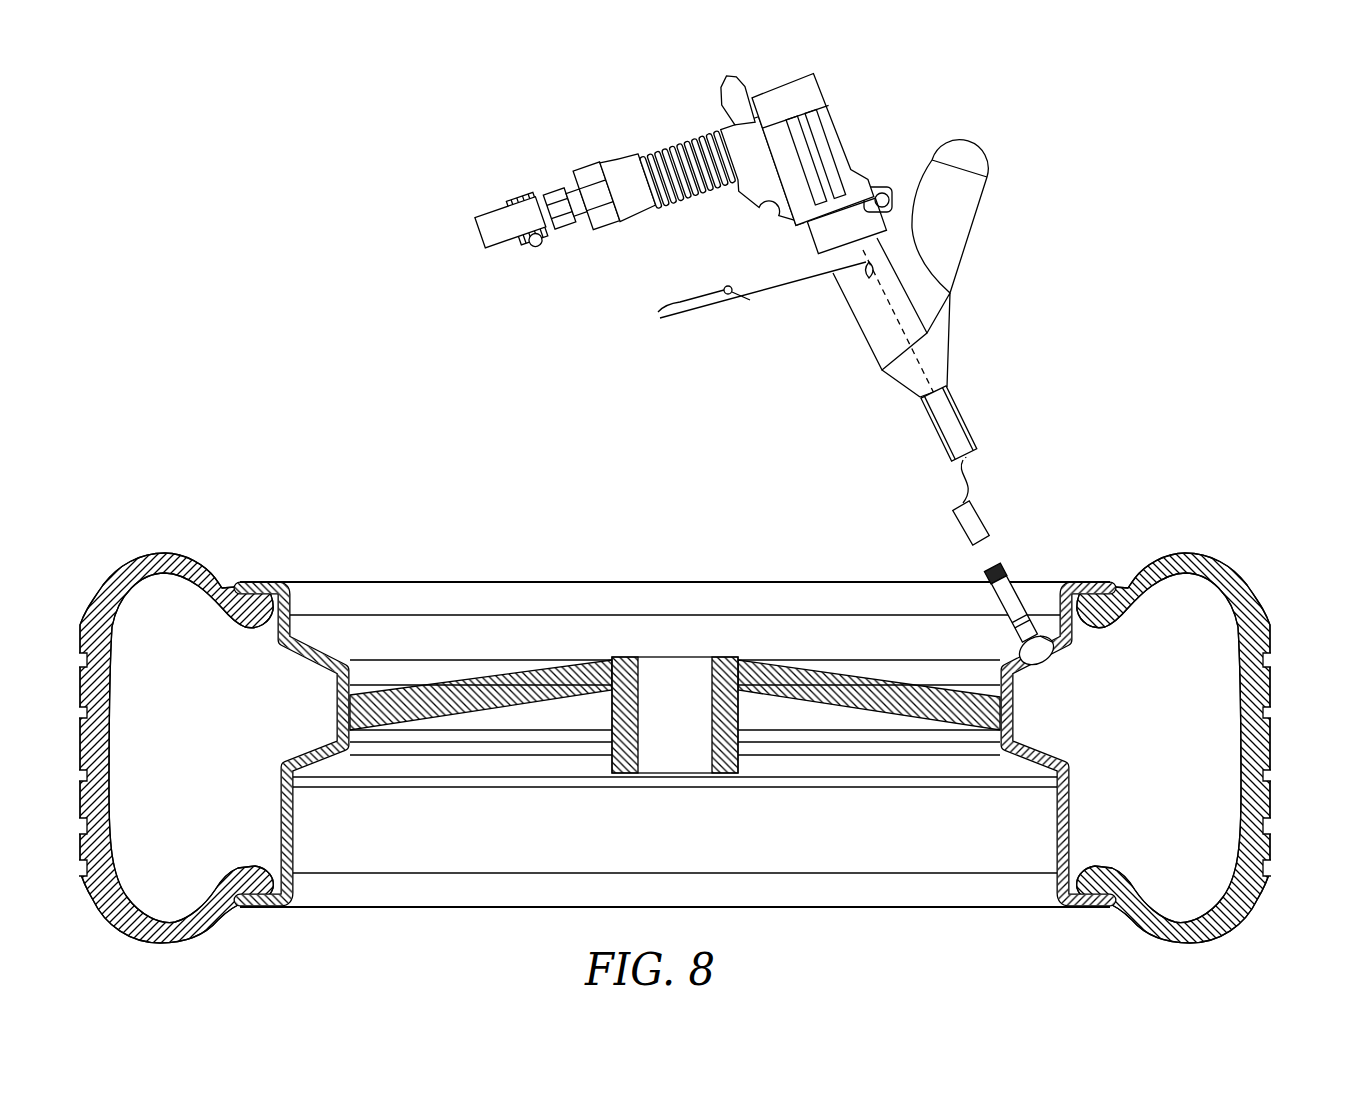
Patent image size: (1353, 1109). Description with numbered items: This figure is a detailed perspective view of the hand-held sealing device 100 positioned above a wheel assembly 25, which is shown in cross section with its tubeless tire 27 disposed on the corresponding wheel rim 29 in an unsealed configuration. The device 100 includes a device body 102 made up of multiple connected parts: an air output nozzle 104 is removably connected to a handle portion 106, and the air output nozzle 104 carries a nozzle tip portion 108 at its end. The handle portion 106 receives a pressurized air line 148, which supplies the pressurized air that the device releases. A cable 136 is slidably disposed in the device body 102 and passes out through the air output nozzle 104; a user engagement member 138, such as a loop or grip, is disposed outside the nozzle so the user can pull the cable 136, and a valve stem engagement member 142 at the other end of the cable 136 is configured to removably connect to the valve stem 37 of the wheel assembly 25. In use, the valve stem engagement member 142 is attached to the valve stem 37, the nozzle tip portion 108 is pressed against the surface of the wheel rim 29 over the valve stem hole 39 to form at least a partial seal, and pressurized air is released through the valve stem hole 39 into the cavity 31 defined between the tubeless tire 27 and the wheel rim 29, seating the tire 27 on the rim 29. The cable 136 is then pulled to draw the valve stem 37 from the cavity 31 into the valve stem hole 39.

The wheel assembly 25 is at (378, 926).
The tubeless tire 27 is at (160, 946).
The wheel rim 29 is at (1037, 911).
The cavity 31 is at (1187, 906).
The valve stem 37 is at (1005, 568).
The valve stem hole 39 is at (1052, 624).
The hand-held sealing device 100 is at (763, 302).
The device body 102 is at (843, 142).
The air output nozzle 104 is at (955, 345).
The handle portion 106 is at (681, 135).
The nozzle tip portion 108 is at (967, 415).
The cable 136 is at (962, 480).
The user engagement member 138 is at (658, 316).
The valve stem engagement member 142 is at (958, 530).
The pressurized air line 148 is at (500, 250).